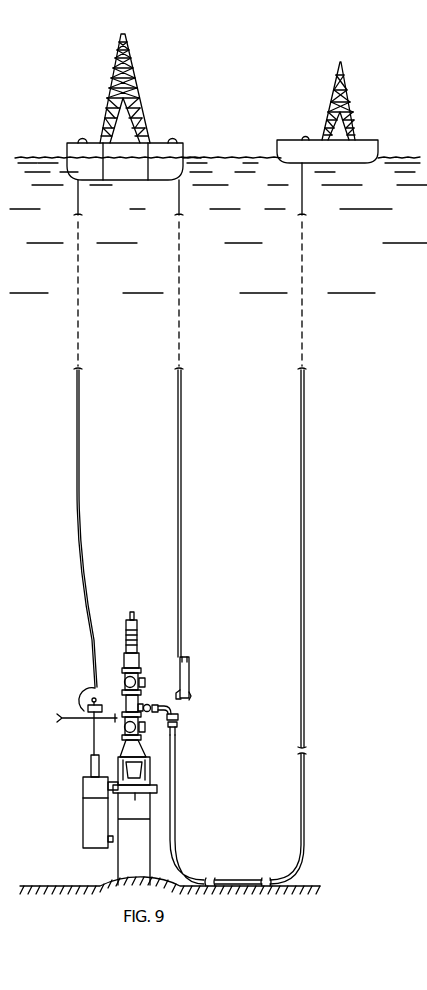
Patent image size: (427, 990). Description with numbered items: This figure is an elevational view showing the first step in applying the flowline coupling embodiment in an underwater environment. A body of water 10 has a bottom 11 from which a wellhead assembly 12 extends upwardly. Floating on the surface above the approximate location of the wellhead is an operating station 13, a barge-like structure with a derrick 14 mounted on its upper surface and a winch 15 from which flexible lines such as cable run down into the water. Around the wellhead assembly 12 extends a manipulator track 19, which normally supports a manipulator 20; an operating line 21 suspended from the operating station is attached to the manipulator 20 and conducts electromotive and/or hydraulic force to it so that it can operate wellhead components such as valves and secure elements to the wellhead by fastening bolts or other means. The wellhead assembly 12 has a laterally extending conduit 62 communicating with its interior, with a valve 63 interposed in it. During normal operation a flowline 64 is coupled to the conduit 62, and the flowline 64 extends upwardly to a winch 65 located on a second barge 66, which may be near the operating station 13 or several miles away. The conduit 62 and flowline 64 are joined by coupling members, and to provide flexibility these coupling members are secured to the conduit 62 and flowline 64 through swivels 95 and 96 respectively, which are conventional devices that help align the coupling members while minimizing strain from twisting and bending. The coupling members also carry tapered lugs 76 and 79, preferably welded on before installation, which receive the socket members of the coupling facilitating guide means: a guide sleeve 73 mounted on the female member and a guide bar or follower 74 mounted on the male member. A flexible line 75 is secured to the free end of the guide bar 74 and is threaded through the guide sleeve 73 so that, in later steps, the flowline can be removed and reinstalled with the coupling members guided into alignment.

The body of water 10 is at (212, 157).
The bottom 11 is at (55, 887).
The wellhead assembly 12 is at (142, 869).
The operating station 13 is at (150, 98).
The derrick 14 is at (138, 58).
The winch 15 is at (174, 138).
The manipulator track 19 is at (157, 788).
The manipulator 20 is at (90, 809).
The operating line 21 is at (80, 203).
The laterally extending conduit 62 is at (144, 734).
The valve 63 is at (148, 710).
The flowline 64 is at (176, 818).
The winch 65 is at (303, 138).
The barge 66 is at (367, 147).
The guide sleeve 73 is at (198, 665).
The guide bar 74 is at (194, 699).
The flexible line 75 is at (182, 435).
The tapered lug 76 is at (179, 717).
The tapered lug 79 is at (178, 724).
The swivel 95 is at (162, 705).
The swivel 96 is at (178, 733).